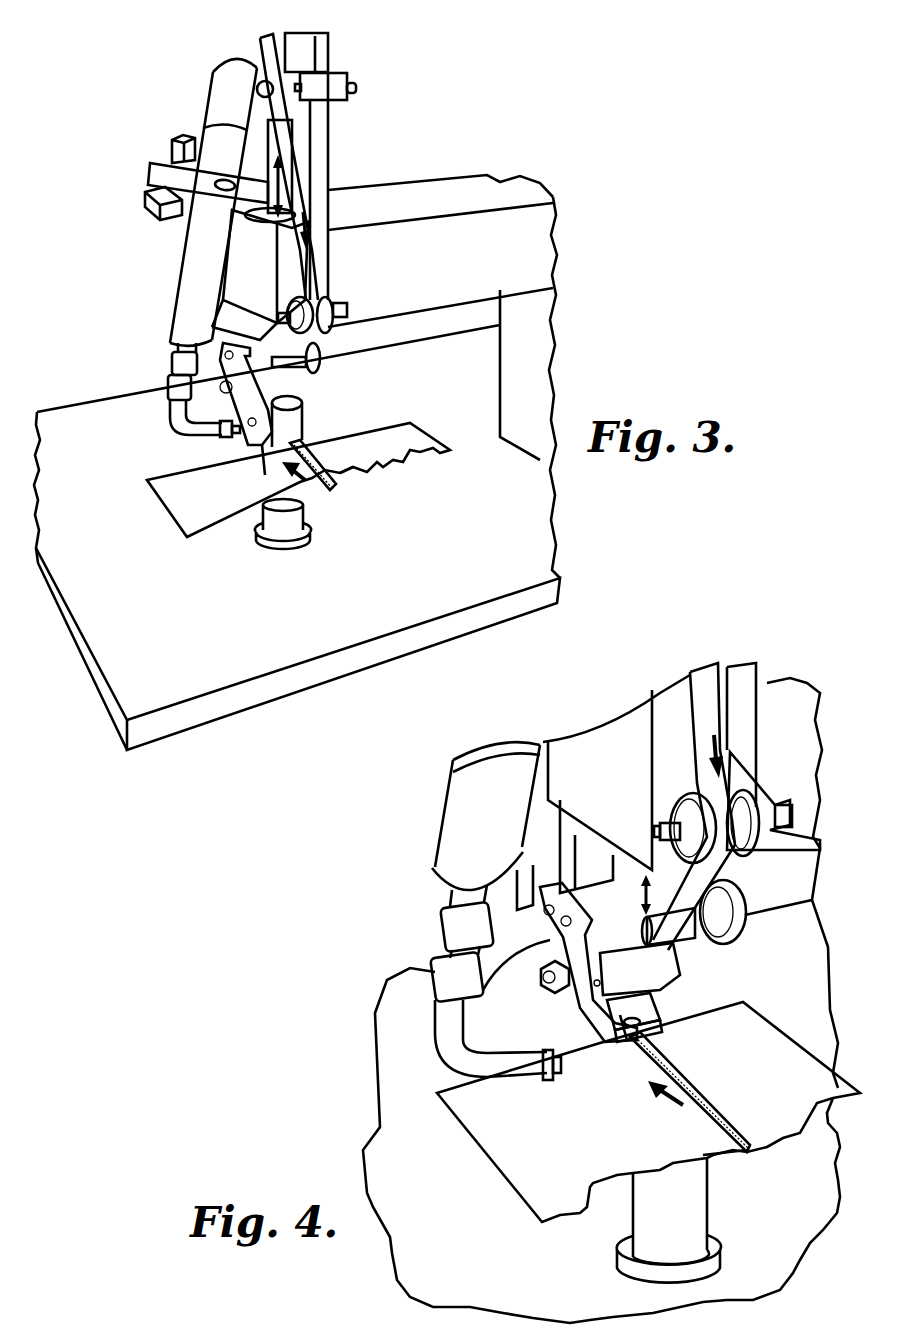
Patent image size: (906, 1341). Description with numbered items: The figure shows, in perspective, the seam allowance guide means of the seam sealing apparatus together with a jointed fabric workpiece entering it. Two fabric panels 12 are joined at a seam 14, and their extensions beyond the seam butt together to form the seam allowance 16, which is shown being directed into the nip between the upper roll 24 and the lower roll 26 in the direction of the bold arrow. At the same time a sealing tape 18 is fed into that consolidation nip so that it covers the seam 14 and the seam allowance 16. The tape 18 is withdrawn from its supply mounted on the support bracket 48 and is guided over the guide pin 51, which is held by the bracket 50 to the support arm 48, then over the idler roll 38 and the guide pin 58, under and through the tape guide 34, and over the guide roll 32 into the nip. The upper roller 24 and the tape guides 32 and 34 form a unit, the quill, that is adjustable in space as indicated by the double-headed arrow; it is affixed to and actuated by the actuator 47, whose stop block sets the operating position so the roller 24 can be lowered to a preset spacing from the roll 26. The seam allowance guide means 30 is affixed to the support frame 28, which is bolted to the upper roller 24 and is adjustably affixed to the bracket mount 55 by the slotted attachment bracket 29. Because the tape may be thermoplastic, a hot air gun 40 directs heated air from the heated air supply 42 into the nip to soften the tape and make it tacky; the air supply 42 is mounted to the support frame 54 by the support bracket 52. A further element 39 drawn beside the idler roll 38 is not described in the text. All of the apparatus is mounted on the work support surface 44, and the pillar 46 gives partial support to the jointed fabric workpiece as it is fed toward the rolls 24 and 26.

In FIG. 3, the fabric panels 12 is at (187, 522).
In FIG. 4, the fabric panels 12 is at (840, 1088).
In FIG. 3, the seam 14 is at (250, 480).
In FIG. 4, the seam 14 is at (710, 1120).
In FIG. 3, the seam allowance 16 is at (365, 470).
In FIG. 4, the seam allowance 16 is at (715, 1100).
In FIG. 3, the sealing tape 18 is at (297, 180).
In FIG. 4, the sealing tape 18 is at (647, 700).
In FIG. 3, the upper consolidation nip roller 24 is at (302, 428).
In FIG. 4, the upper consolidation nip roller 24 is at (665, 1038).
In FIG. 3, the lower roll 26 is at (215, 500).
In FIG. 4, the lower roll 26 is at (587, 1030).
In FIG. 3, the support frame 28 is at (250, 372).
In FIG. 4, the support frame 28 is at (550, 940).
In FIG. 3, the slotted attachment bracket 29 is at (222, 355).
In FIG. 4, the slotted attachment bracket 29 is at (550, 925).
In FIG. 3, the seam allowance guide means 30 is at (253, 432).
In FIG. 4, the seam allowance guide means 30 is at (627, 1060).
In FIG. 3, the guide roll 32 is at (302, 408).
In FIG. 4, the guide roll 32 is at (680, 1015).
In FIG. 3, the tape guide 34 is at (295, 392).
In FIG. 4, the tape guide 34 is at (667, 975).
In FIG. 3, the idler roll 38 is at (320, 333).
In FIG. 4, the idler roll 38 is at (687, 810).
In FIG. 3, the pulley bracket 39 is at (333, 303).
In FIG. 4, the pulley bracket 39 is at (760, 800).
In FIG. 3, the hot air gun 40 is at (220, 440).
In FIG. 4, the hot air gun 40 is at (537, 1082).
In FIG. 3, the heated air supply 42 is at (197, 273).
In FIG. 4, the heated air supply 42 is at (487, 823).
In FIG. 3, the work support surface 44 is at (480, 577).
In FIG. 3, the pillar 46 is at (320, 510).
In FIG. 4, the pillar 46 is at (673, 1190).
In FIG. 3, the actuator 47 is at (280, 150).
In FIG. 4, the actuator 47 is at (657, 887).
In FIG. 3, the support bracket 48 is at (303, 53).
In FIG. 4, the support bracket 48 is at (743, 727).
In FIG. 3, the bracket 50 is at (335, 92).
In FIG. 3, the guide pin 51 is at (268, 46).
In FIG. 3, the support bracket 52 is at (170, 173).
In FIG. 3, the support frame 54 is at (493, 270).
In FIG. 3, the bracket mount 55 is at (240, 303).
In FIG. 4, the bracket mount 55 is at (587, 883).
In FIG. 3, the guide pin 58 is at (257, 330).
In FIG. 4, the guide pin 58 is at (673, 963).